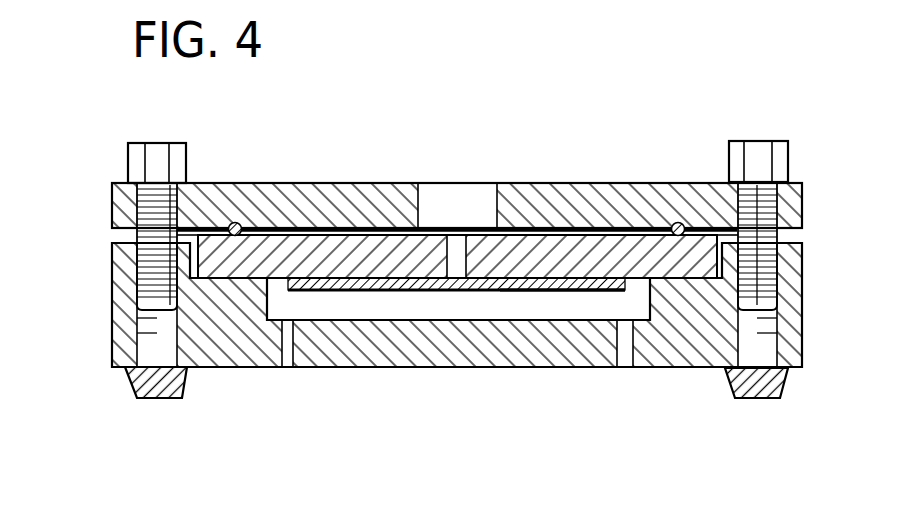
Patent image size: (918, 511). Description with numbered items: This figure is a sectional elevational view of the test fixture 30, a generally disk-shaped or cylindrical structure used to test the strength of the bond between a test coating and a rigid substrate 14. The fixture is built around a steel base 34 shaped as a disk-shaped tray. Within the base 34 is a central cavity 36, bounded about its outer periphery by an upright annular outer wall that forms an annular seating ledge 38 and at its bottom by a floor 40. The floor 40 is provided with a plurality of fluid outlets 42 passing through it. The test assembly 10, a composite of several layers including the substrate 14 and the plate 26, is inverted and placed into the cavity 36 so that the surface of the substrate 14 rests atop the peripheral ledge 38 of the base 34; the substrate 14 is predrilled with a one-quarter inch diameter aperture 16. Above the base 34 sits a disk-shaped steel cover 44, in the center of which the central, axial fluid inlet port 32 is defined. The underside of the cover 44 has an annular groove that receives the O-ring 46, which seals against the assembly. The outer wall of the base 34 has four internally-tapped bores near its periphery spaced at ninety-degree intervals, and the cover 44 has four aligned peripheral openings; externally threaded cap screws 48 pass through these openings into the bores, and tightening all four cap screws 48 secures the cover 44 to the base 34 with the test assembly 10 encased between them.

The test assembly 10 is at (376, 296).
The rigid substrate 14 is at (318, 254).
The aperture 16 is at (458, 265).
The plate 26 is at (548, 296).
The test fixture 30 is at (175, 432).
The fluid inlet port 32 is at (497, 203).
The base 34 is at (112, 300).
The central cavity 36 is at (478, 300).
The annular seating ledge 38 is at (223, 277).
The floor 40 is at (390, 368).
The fluid outlets 42 is at (290, 344).
The cover 44 is at (570, 182).
The O-ring 46 is at (235, 222).
The cap screws 48 is at (160, 153).